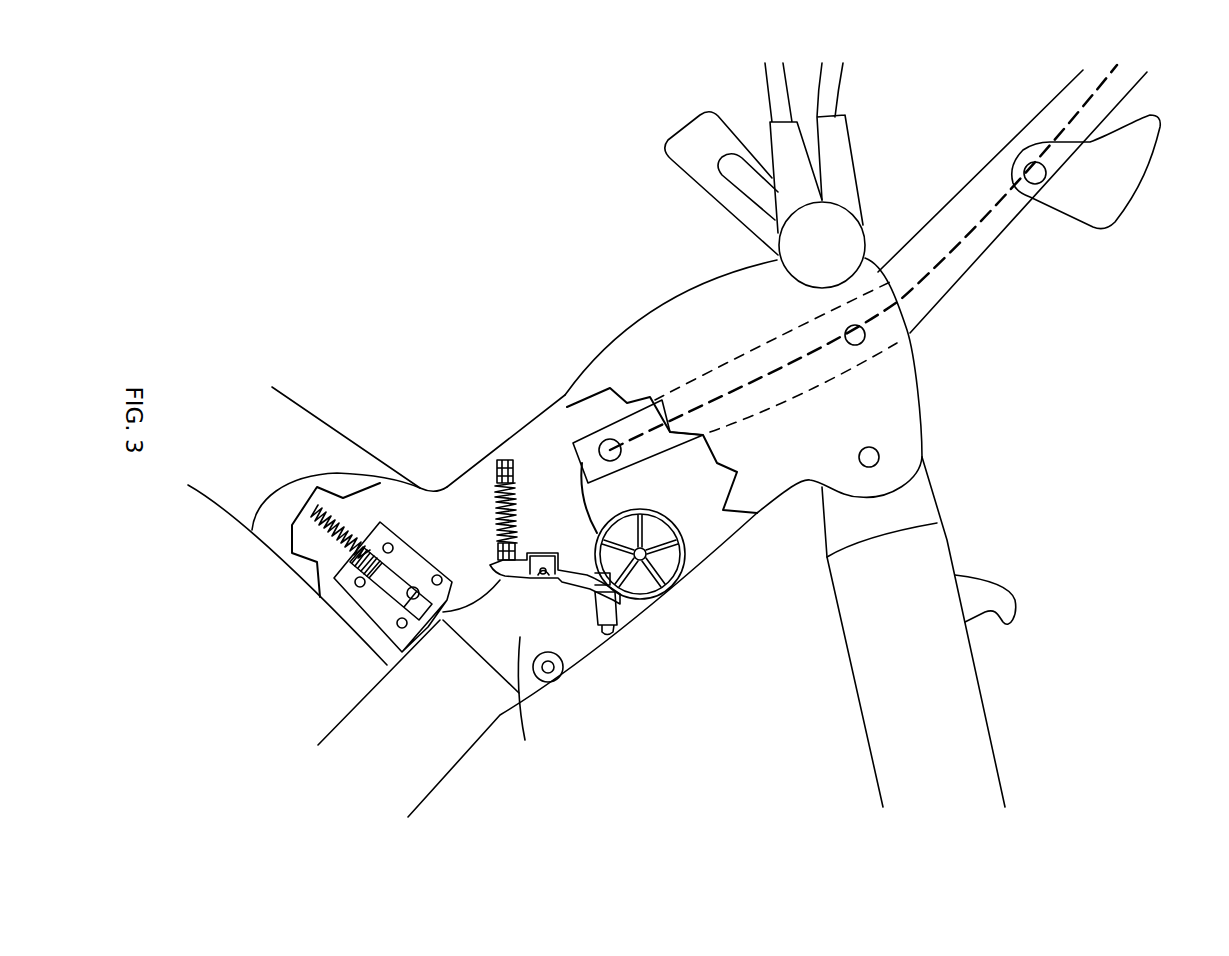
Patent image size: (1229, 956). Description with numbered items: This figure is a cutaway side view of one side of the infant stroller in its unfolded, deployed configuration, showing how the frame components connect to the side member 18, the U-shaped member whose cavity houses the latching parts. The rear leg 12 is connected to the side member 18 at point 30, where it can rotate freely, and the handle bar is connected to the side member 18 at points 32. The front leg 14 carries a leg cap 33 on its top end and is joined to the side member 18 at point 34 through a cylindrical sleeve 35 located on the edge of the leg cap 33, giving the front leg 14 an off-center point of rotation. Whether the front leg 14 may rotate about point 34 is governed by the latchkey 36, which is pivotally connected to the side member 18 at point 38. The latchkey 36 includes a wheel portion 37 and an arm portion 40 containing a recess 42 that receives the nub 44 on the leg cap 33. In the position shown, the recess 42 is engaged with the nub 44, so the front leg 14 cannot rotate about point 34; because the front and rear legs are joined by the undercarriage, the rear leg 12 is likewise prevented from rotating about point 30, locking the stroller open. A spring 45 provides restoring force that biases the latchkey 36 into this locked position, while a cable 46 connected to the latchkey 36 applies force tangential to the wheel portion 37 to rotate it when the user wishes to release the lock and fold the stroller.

The rear leg 12 is at (985, 708).
The front leg 14 is at (395, 683).
The side member 18 is at (682, 325).
The attachment point of rear leg 30 is at (869, 457).
The handle bar connection points 32 is at (865, 335).
The leg cap 33 is at (531, 708).
The attachment point of front leg 34 is at (548, 668).
The cylindrical sleeve 35 is at (555, 675).
The latchkey 36 is at (628, 610).
The wheel portion 37 is at (663, 603).
The latchkey pivot point 38 is at (647, 560).
The arm portion 40 is at (580, 560).
The recess 42 is at (553, 555).
The nub 44 is at (543, 573).
The spring 45 is at (497, 485).
The cable 46 is at (587, 505).